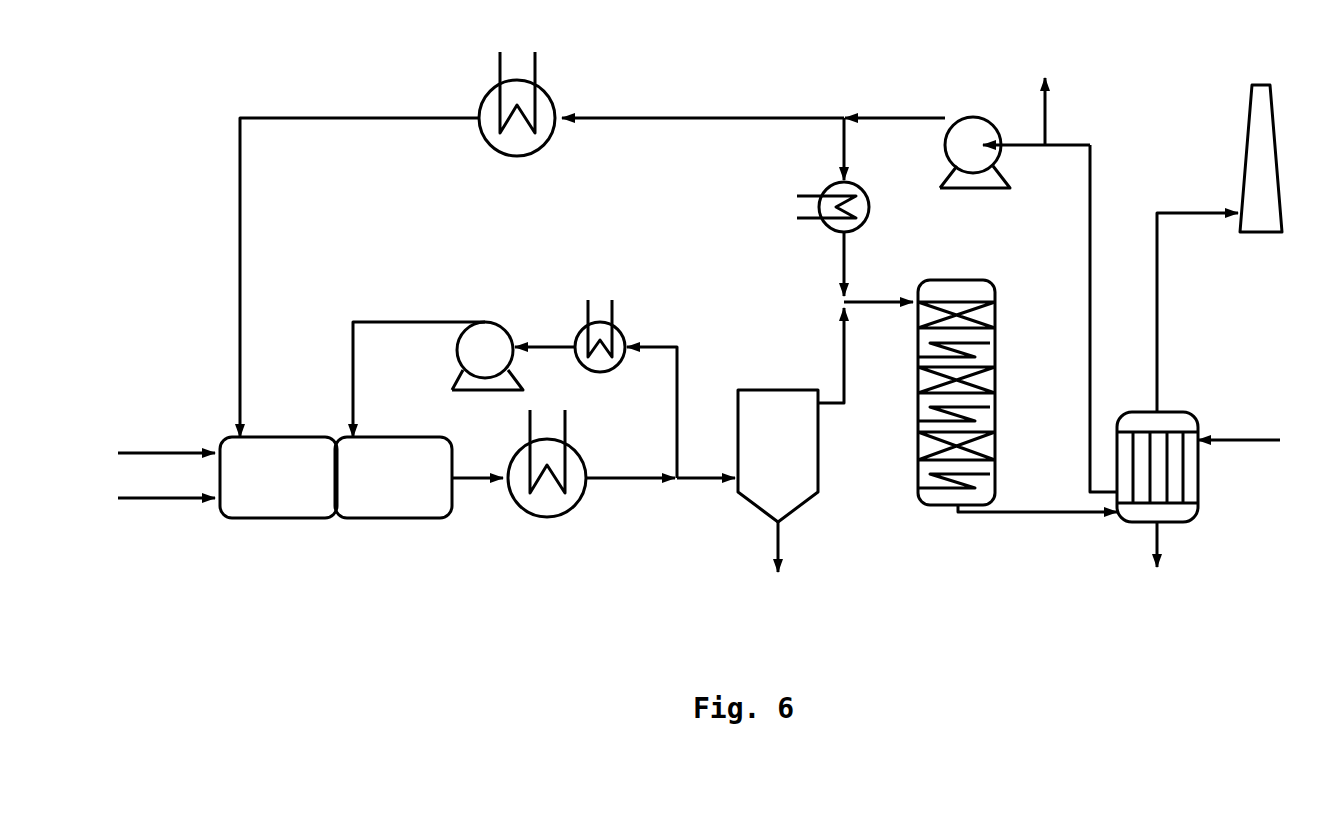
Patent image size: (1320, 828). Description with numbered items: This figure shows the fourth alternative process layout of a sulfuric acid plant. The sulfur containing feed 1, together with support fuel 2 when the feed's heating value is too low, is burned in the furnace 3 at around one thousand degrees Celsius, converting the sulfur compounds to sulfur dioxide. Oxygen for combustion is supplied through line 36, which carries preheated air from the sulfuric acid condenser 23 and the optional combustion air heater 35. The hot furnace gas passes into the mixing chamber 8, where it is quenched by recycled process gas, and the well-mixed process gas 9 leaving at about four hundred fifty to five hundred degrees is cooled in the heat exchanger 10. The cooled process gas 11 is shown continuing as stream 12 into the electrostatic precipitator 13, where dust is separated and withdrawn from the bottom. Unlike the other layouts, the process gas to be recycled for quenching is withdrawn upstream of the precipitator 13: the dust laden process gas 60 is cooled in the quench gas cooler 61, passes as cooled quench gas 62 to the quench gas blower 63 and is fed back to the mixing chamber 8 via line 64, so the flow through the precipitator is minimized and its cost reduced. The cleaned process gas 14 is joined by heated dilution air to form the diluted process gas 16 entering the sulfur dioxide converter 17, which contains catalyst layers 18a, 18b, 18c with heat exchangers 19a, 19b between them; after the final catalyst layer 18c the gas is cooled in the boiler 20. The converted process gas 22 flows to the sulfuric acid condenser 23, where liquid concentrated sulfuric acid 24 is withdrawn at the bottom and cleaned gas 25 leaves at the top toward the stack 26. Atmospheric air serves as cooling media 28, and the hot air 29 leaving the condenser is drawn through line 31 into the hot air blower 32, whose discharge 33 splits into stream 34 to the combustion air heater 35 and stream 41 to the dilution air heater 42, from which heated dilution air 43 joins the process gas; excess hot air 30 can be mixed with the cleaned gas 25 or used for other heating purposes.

The sulfur containing feed 1 is at (166, 518).
The support fuel 2 is at (166, 435).
The furnace 3 is at (278, 477).
The mixing chamber 8 is at (393, 477).
The well-mixed process gas 9 is at (477, 501).
The heat exchanger 10 is at (547, 484).
The heated stream 11 is at (630, 499).
The inlet stream to separator 12 is at (706, 502).
The electrostatic precipitator 13 is at (778, 481).
The cleaned process gas 14 is at (822, 355).
The diluted process gas 16 is at (878, 285).
The SO2 converter 17 is at (936, 411).
The catalyst layer 18a is at (987, 317).
The catalyst layer 18b is at (988, 378).
The final catalyst layer 18c is at (987, 443).
The heat exchanger 19a is at (988, 345).
The heat exchanger 19b is at (988, 410).
The boiler 20 is at (980, 477).
The process gas 22 is at (1037, 530).
The sulfuric acid condenser 23 is at (1171, 451).
The liquid concentrated H2SO4 24 is at (1183, 547).
The cleaned gas 25 is at (1197, 312).
The stack 26 is at (1241, 158).
The cooling media 28 is at (1239, 461).
The hot air 29 is at (1110, 318).
The hot air not used 30 is at (1068, 104).
The pump inlet line 31 is at (1036, 130).
The hot air blower 32 is at (975, 129).
The pump outlet line 33 is at (895, 98).
The recycle line 34 is at (703, 101).
The combustion air heater 35 is at (517, 87).
The preheated combustion air line 36 is at (334, 277).
The branch stream 41 is at (818, 149).
The dilution air heater 42 is at (811, 207).
The cooled stream 43 is at (819, 264).
The dust laden process gas 60 is at (652, 412).
The quench gas cooler 61 is at (600, 317).
The recirculation pump inlet line 62 is at (545, 328).
The quench gas blower 63 is at (487, 337).
The quench gas line 64 is at (397, 379).